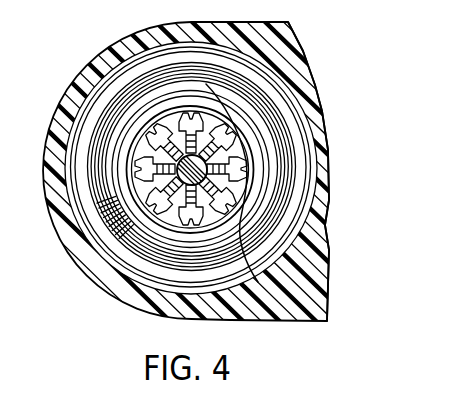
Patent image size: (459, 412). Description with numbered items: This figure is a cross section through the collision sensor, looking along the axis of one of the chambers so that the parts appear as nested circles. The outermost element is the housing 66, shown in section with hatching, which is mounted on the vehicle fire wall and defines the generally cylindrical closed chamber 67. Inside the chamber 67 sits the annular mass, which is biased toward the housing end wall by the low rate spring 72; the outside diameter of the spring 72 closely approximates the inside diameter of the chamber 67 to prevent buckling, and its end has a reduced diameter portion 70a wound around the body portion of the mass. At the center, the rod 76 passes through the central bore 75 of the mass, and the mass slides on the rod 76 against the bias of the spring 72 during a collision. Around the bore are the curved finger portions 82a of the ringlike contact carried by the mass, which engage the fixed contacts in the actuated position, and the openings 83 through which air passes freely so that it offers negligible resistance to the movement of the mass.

The housing 66 is at (97, 57).
The chamber 67 is at (82, 113).
The reduced diameter portion 70a is at (326, 204).
The spring 72 is at (145, 47).
The central opening or bore 75 is at (198, 166).
The rod 76 is at (183, 184).
The curved finger portions 82a is at (192, 126).
The openings 83 is at (226, 283).